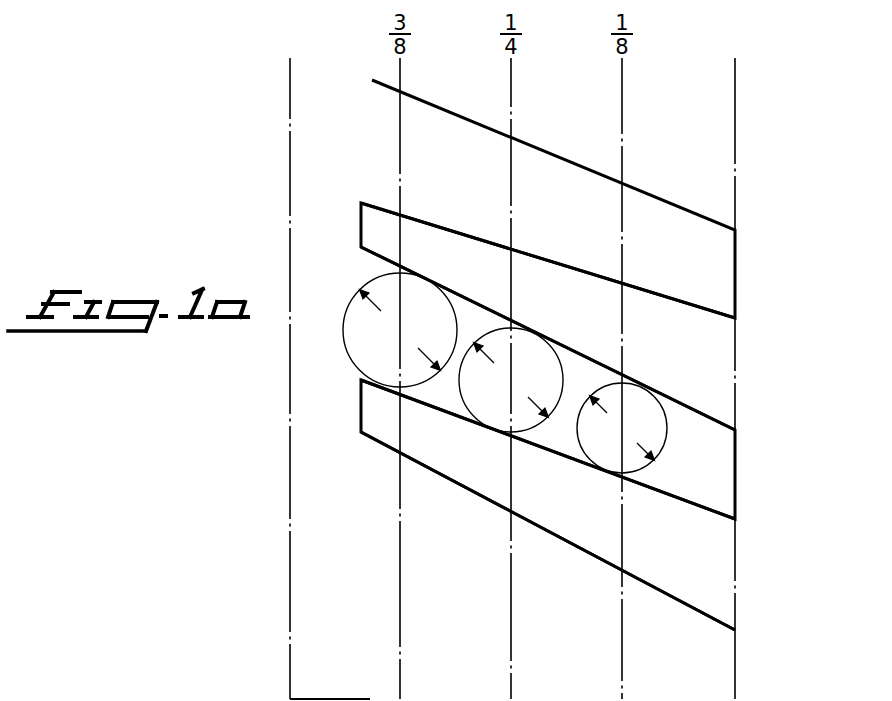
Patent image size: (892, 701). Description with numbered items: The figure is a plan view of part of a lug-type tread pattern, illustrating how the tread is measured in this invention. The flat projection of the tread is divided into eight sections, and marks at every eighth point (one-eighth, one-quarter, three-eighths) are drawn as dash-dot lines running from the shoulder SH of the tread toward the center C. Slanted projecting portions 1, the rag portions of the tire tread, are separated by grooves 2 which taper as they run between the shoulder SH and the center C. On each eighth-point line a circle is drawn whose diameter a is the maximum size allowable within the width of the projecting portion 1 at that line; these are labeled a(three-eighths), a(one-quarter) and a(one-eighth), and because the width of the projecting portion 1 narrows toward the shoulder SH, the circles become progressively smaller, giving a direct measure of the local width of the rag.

The projecting portion 1 is at (713, 262).
The groove 2 is at (710, 377).
The diameter of a circle a is at (505, 373).
The center C is at (323, 365).
The shoulder SH is at (734, 364).